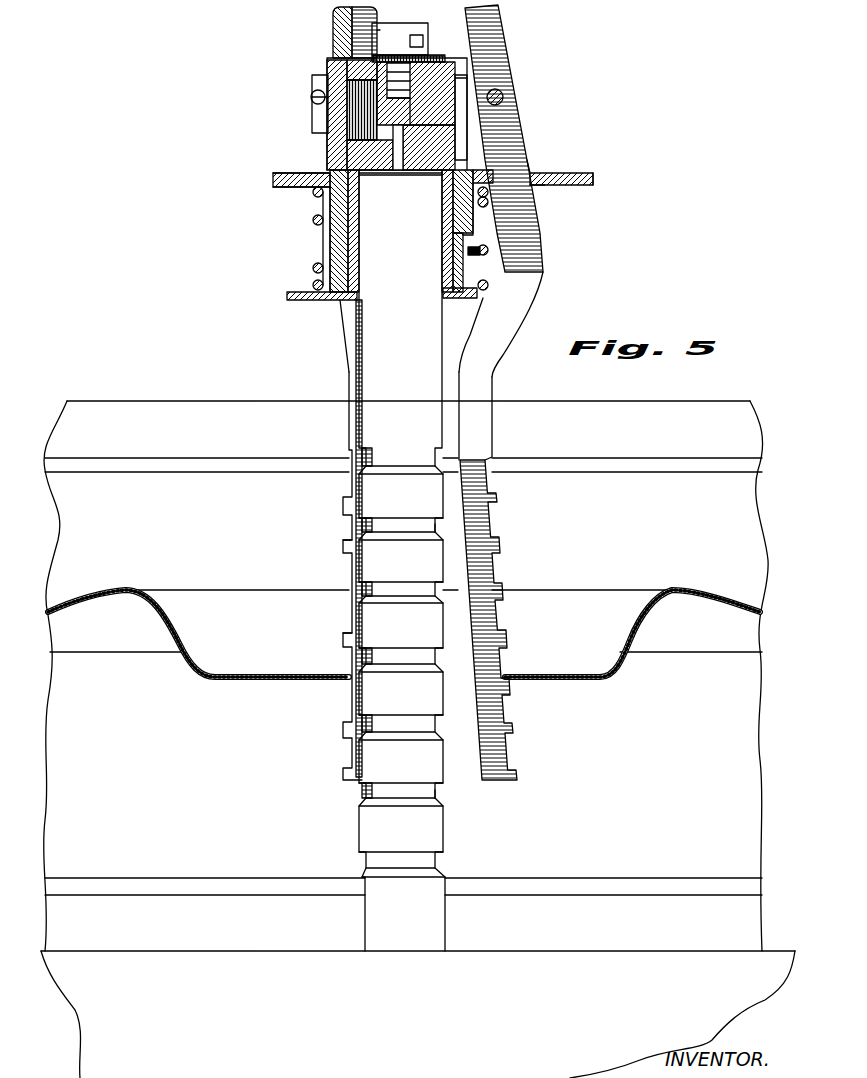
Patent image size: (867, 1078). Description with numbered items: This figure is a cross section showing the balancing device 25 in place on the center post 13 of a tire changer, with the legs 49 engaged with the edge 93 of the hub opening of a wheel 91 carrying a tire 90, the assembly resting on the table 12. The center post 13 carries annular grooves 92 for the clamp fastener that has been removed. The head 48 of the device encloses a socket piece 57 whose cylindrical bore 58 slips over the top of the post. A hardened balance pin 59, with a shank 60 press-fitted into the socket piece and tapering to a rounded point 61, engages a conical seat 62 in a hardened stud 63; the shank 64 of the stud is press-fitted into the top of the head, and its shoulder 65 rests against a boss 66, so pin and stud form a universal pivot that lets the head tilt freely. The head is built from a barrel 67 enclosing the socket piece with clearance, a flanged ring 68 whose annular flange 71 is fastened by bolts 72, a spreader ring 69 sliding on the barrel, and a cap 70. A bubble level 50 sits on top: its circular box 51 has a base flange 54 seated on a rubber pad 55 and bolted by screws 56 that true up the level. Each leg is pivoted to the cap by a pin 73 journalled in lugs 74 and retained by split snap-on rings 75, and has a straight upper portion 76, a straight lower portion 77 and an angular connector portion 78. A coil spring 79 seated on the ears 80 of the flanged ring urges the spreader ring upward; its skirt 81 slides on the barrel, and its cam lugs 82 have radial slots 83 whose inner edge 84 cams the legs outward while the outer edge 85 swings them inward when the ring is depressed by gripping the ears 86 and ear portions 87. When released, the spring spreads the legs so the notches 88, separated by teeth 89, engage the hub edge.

The table 12 is at (102, 1014).
The center post 13 is at (440, 920).
The balancing device 25 is at (526, 131).
The head 48 is at (323, 213).
The legs 49 is at (348, 418).
The bubble level 50 is at (378, 32).
The circular box 51 is at (424, 37).
The base flange 54 is at (400, 39).
The rubber pad 55 is at (420, 53).
The screws 56 is at (418, 24).
The socket piece 57 is at (359, 278).
The cylindrical bore 58 is at (362, 226).
The balance pin 59 is at (405, 122).
The shank 60 is at (410, 172).
The rounded point 61 is at (380, 112).
The conical seat 62 is at (338, 140).
The stud 63 is at (345, 118).
The shank 64 is at (470, 78).
The shoulder 65 is at (415, 92).
The boss 66 is at (462, 108).
The barrel 67 is at (335, 252).
The flanged ring 68 is at (462, 300).
The spreader ring 69 is at (316, 187).
The cap 70 is at (332, 70).
The annular flange 71 is at (316, 278).
The bolts 72 is at (483, 277).
The pin 73 is at (313, 100).
The lugs 74 is at (312, 78).
The split snap-on rings 75 is at (312, 96).
The upper portion 76 is at (528, 152).
The lower portion 77 is at (348, 444).
The connector portion 78 is at (338, 336).
The coil spring 79 is at (316, 222).
The ears 80 is at (290, 299).
The skirt 81 is at (476, 218).
The cam lugs 82 is at (281, 171).
The radial slot 83 is at (493, 198).
The inner edge 84 is at (515, 165).
The outer edge 85 is at (540, 190).
The ears 86 is at (273, 181).
The ear portion 87 is at (594, 180).
The notches 88 is at (492, 572).
The teeth 89 is at (343, 503).
The tire 90 is at (722, 403).
The wheel 91 is at (675, 590).
The annular grooves 92 is at (440, 524).
The edge of hub opening 93 is at (322, 680).